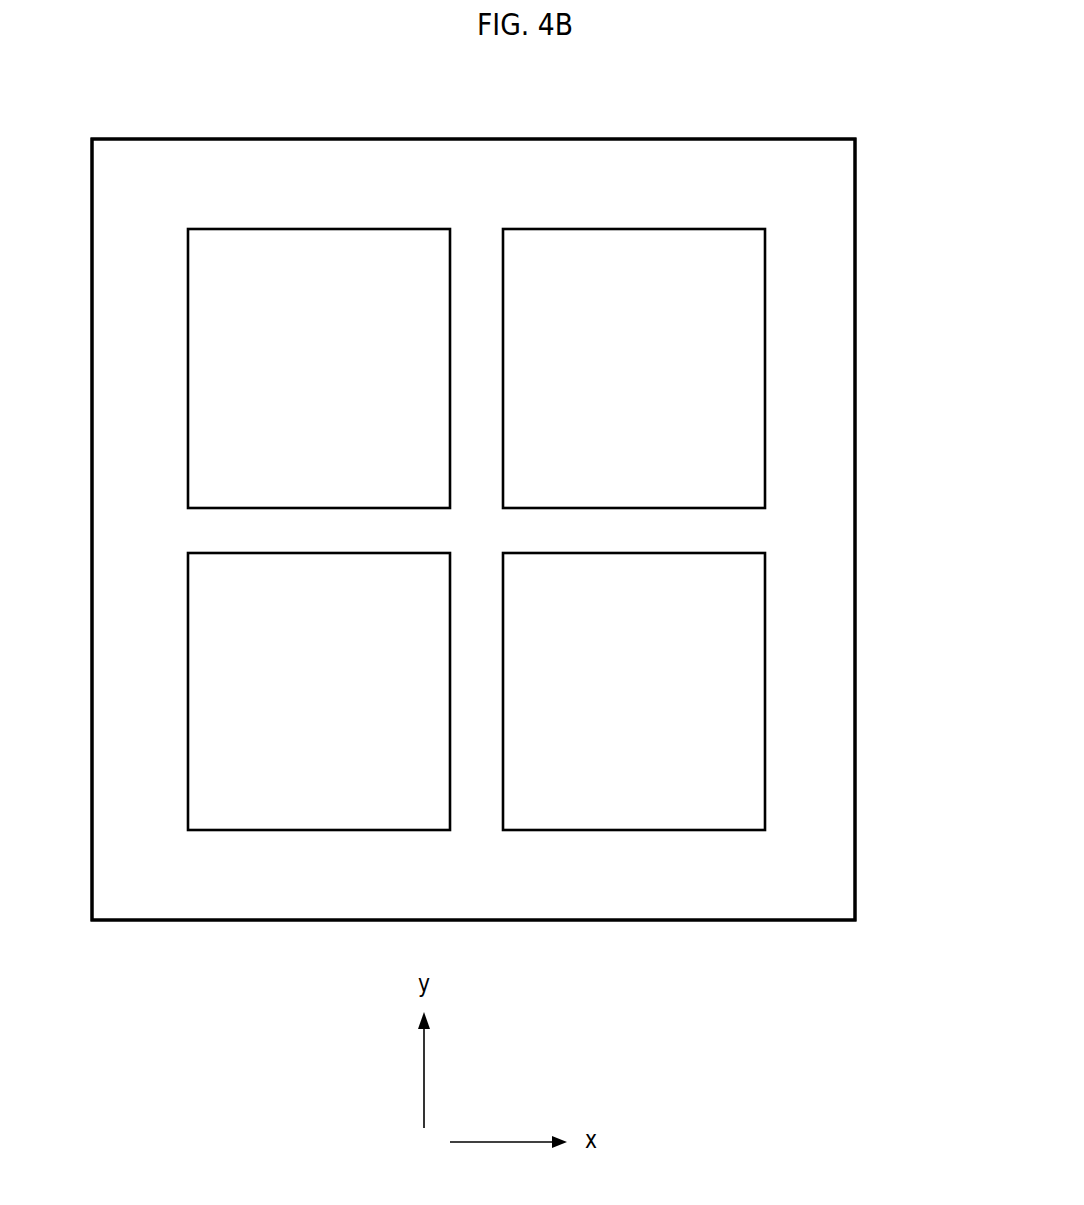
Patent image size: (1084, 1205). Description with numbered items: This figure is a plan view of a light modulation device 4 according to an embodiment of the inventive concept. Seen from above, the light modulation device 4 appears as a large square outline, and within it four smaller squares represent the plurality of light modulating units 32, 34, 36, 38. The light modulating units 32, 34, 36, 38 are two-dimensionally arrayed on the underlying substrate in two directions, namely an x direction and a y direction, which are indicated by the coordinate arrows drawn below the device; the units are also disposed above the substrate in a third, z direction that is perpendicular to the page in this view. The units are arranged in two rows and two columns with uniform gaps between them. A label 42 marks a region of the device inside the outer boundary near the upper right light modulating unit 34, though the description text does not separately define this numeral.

The light modulation device 4 is at (898, 156).
The substrate region between sub-pixels 42 is at (473, 529).
The light modulating unit 32 is at (319, 368).
The light modulating unit 34 is at (634, 368).
The light modulating unit 36 is at (319, 691).
The light modulating unit 38 is at (634, 691).